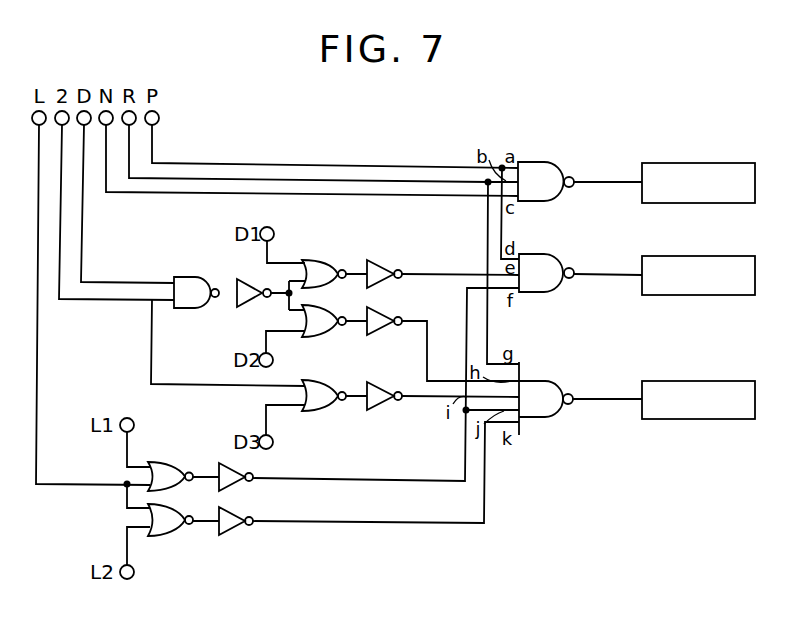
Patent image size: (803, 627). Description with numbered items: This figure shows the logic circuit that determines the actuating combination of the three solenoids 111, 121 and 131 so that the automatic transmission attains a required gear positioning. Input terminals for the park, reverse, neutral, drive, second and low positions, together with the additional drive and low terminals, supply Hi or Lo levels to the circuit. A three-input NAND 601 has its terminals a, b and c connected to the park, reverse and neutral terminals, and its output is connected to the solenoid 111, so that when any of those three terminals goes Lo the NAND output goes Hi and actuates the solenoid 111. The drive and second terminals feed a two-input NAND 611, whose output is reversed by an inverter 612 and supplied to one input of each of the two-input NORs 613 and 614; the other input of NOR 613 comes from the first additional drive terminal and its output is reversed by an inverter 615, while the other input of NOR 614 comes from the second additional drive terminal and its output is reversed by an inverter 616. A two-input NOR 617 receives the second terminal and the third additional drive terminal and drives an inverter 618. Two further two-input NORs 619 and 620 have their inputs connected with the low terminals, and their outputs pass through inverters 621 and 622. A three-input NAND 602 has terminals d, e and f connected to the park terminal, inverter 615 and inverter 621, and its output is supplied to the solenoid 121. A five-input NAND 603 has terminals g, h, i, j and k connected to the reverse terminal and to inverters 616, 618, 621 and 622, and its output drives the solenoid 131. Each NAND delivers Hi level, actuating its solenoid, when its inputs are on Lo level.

The three input NAND 601 is at (538, 162).
The three-input NAND 602 is at (538, 254).
The five-input NAND 603 is at (538, 381).
The solenoid 111 is at (699, 163).
The solenoid 121 is at (699, 256).
The solenoid 131 is at (699, 381).
The two-input NAND 611 is at (187, 277).
The inverter 612 is at (255, 286).
The two-input NOR 613 is at (316, 260).
The two-input NOR 614 is at (316, 337).
The inverter 615 is at (388, 260).
The inverter 616 is at (386, 335).
The two-input NOR 617 is at (315, 411).
The inverter 618 is at (386, 410).
The two-input NOR 619 is at (165, 462).
The two-input NOR 620 is at (166, 537).
The inverter 621 is at (237, 486).
The inverter 622 is at (237, 530).